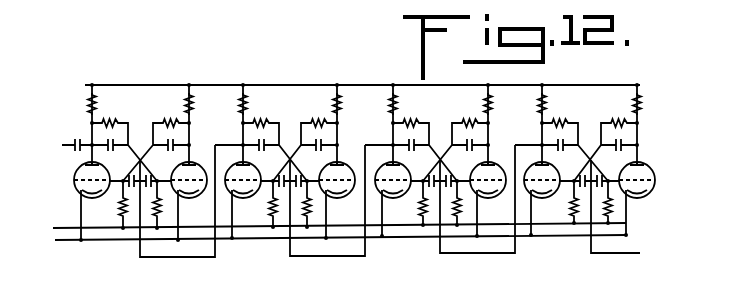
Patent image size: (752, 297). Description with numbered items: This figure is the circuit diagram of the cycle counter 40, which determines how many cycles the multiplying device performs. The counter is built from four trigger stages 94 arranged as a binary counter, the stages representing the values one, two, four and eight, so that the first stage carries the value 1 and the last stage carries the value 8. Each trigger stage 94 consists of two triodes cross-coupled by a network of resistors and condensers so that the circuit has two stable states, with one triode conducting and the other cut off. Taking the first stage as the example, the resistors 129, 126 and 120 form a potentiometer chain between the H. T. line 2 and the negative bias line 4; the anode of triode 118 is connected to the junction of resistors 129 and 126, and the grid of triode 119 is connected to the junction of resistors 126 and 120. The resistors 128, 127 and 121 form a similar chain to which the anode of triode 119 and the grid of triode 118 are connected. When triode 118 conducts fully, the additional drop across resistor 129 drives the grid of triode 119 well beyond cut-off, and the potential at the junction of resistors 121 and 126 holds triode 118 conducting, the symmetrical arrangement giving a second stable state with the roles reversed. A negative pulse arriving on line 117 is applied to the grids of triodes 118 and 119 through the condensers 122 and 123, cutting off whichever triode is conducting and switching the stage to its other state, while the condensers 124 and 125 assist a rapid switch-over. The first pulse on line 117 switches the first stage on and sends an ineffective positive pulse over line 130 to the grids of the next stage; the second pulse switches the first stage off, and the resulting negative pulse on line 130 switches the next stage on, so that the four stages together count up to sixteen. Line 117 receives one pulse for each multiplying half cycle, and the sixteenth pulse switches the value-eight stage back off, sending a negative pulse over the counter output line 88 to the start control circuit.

The value "1" stage designation 1 is at (78, 241).
The H. T. line 2 is at (118, 88).
The negative bias line 4 is at (64, 227).
The value "8" trigger stage designation 8 is at (144, 170).
The cycle counter 40 is at (391, 77).
The counter output line 88 is at (70, 144).
The trigger stage 94 is at (378, 137).
The input line 117 is at (640, 253).
The first triode 118 is at (544, 198).
The second triode 119 is at (655, 182).
The potentiometer resistor 120 is at (610, 207).
The potentiometer resistor 121 is at (567, 229).
The input condenser 122 is at (596, 177).
The input condenser 123 is at (584, 178).
The speed-up condenser 124 is at (637, 134).
The speed-up condenser 125 is at (575, 138).
The coupling resistor 126 is at (562, 118).
The coupling resistor 127 is at (617, 118).
The anode resistor 128 is at (647, 93).
The anode resistor 129 is at (540, 97).
The interstage line 130 is at (462, 254).